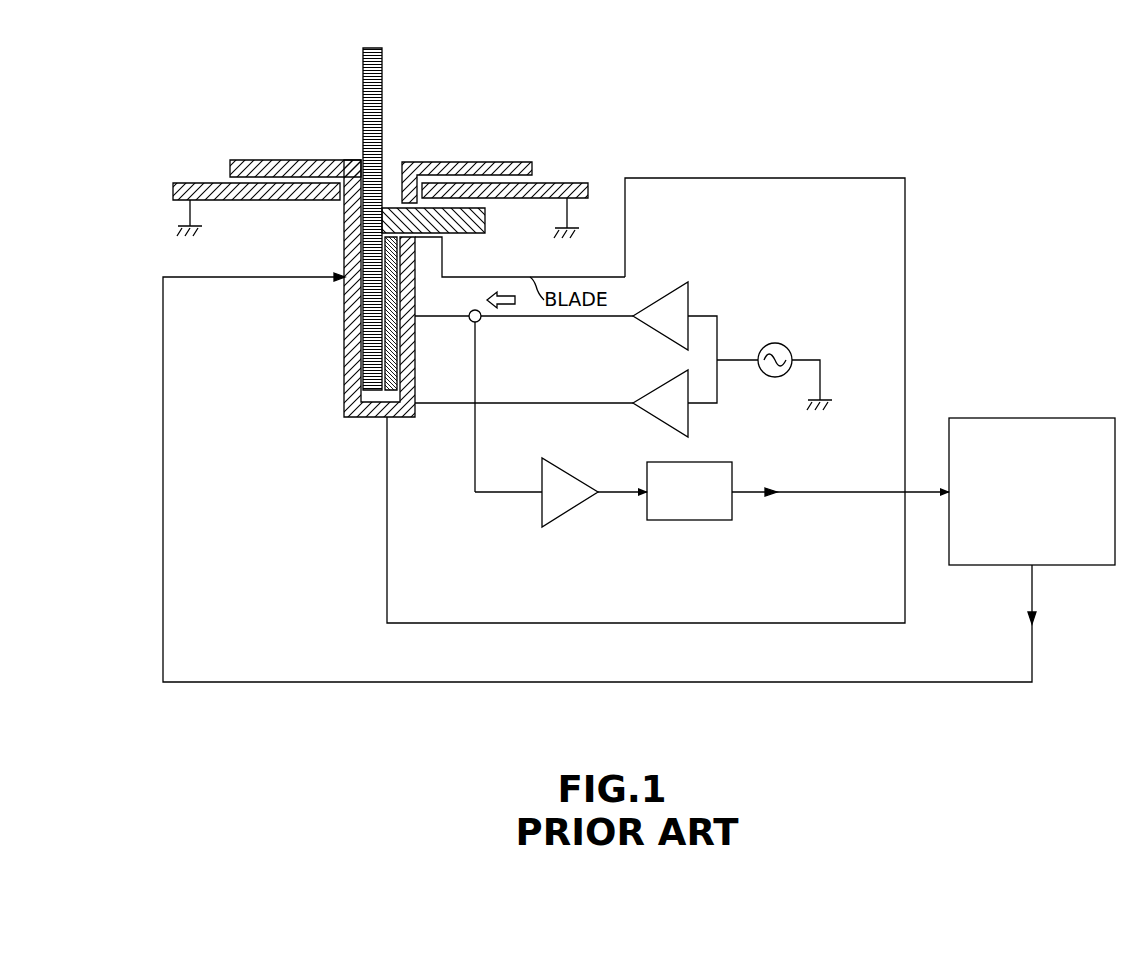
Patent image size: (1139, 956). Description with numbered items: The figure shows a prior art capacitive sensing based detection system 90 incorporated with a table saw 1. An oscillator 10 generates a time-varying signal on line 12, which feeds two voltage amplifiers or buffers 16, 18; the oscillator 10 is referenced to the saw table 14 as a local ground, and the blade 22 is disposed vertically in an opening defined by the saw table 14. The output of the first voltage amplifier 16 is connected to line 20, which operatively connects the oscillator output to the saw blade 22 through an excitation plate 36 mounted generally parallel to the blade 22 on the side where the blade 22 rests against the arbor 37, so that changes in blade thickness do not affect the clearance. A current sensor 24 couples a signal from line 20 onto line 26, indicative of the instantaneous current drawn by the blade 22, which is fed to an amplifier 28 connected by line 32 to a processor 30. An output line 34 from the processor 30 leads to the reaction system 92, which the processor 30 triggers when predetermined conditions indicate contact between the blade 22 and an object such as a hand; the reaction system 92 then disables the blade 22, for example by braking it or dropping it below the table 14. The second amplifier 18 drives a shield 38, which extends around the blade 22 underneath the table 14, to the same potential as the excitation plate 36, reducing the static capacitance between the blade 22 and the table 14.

The table saw 1 is at (666, 110).
The oscillator 10 is at (787, 344).
The line 12 is at (718, 331).
The saw table 14 is at (190, 183).
The first voltage amplifier 16 is at (690, 295).
The second amplifier 18 is at (690, 425).
The line 20 is at (568, 317).
The blade 22 is at (373, 393).
The current sensor 24 is at (482, 323).
The line 26 is at (503, 495).
The amplifier 28 is at (568, 509).
The processor 30 is at (700, 521).
The line 32 is at (612, 495).
The output line 34 is at (804, 490).
The excitation plate 36 is at (389, 402).
The arbor 37 is at (460, 234).
The shield 38 is at (344, 360).
The detection system 90 is at (840, 178).
The reaction system 92 is at (1022, 418).